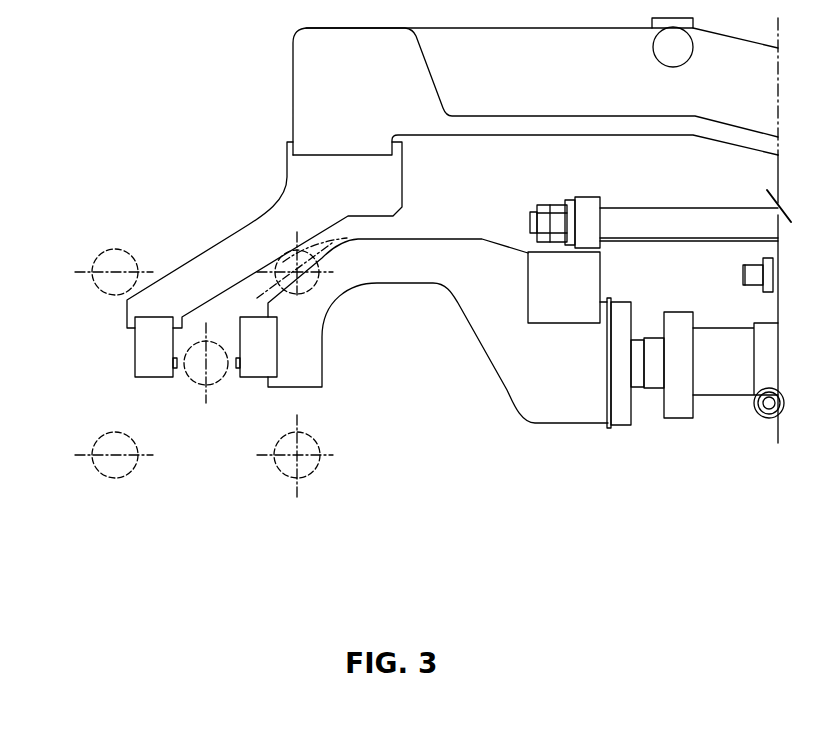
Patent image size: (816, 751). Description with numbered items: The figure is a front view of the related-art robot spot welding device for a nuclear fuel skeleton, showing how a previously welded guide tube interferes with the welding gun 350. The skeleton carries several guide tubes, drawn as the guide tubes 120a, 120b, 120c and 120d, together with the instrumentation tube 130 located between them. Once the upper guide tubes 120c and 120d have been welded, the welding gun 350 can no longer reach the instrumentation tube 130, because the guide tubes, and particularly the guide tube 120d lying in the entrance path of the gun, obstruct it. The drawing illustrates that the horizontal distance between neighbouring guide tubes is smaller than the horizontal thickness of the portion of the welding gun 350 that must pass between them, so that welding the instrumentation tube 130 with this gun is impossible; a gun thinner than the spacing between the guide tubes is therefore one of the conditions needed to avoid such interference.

The welding gun 350 is at (133, 83).
The guide tube 120a is at (97, 473).
The guide tube 120b is at (312, 475).
The upper guide tube 120c is at (97, 290).
The upper guide tube 120d is at (274, 266).
The instrumentation tube 130 is at (195, 382).